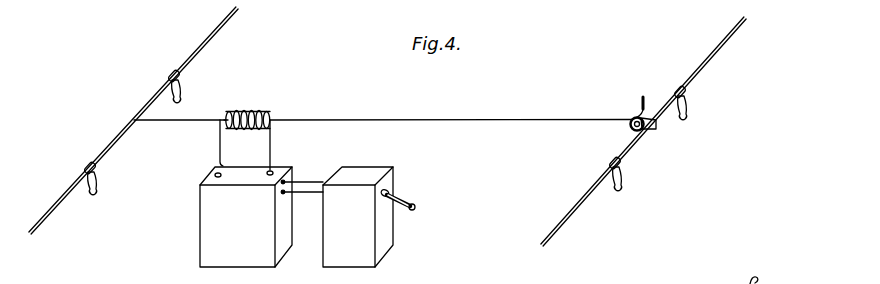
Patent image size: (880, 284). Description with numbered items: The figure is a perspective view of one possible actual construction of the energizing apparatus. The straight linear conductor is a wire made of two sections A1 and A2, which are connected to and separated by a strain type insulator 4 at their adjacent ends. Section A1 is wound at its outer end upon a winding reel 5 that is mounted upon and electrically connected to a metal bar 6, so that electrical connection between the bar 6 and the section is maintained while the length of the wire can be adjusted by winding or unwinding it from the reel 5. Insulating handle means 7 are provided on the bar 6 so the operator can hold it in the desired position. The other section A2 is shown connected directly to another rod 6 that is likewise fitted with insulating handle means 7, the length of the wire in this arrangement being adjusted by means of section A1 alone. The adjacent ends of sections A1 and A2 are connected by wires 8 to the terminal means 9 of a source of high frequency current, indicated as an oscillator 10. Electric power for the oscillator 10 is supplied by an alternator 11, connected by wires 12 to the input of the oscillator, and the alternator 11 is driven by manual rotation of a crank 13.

The strain type insulator 4 is at (259, 110).
The winding reel 5 is at (629, 128).
The metal bar 6 is at (152, 100).
The insulating handle means 7 is at (180, 94).
The wires 8 is at (269, 145).
The terminal means 9 is at (221, 174).
The oscillator 10 is at (216, 231).
The alternator 11 is at (358, 178).
The wires 12 is at (305, 193).
The crank 13 is at (403, 196).
The wire section A1 is at (563, 118).
The wire section A2 is at (200, 119).